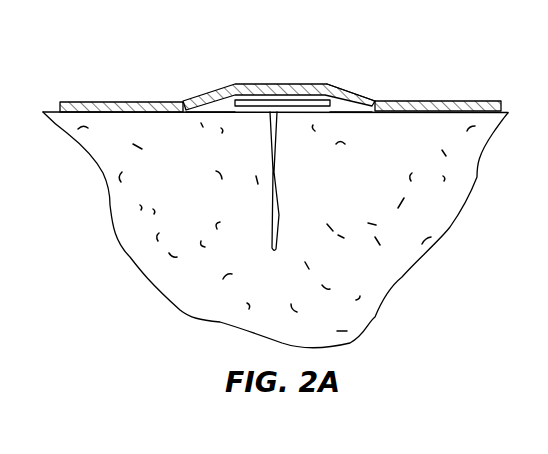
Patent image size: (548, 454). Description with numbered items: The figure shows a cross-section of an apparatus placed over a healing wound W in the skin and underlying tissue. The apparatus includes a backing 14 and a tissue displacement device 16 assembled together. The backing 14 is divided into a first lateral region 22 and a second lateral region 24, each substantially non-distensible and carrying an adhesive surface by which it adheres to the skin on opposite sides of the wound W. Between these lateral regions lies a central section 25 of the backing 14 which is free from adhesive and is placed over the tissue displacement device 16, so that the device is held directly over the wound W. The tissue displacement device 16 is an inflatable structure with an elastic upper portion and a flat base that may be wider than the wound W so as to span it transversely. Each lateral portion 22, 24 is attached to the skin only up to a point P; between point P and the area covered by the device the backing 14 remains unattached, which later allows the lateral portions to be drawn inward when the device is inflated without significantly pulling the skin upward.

The backing 14 is at (176, 56).
The tissue displacement device 16 is at (280, 102).
The first lateral region 22 is at (118, 101).
The second lateral region 24 is at (437, 102).
The central section 25 is at (347, 92).
The point P is at (189, 114).
The wound W is at (275, 172).